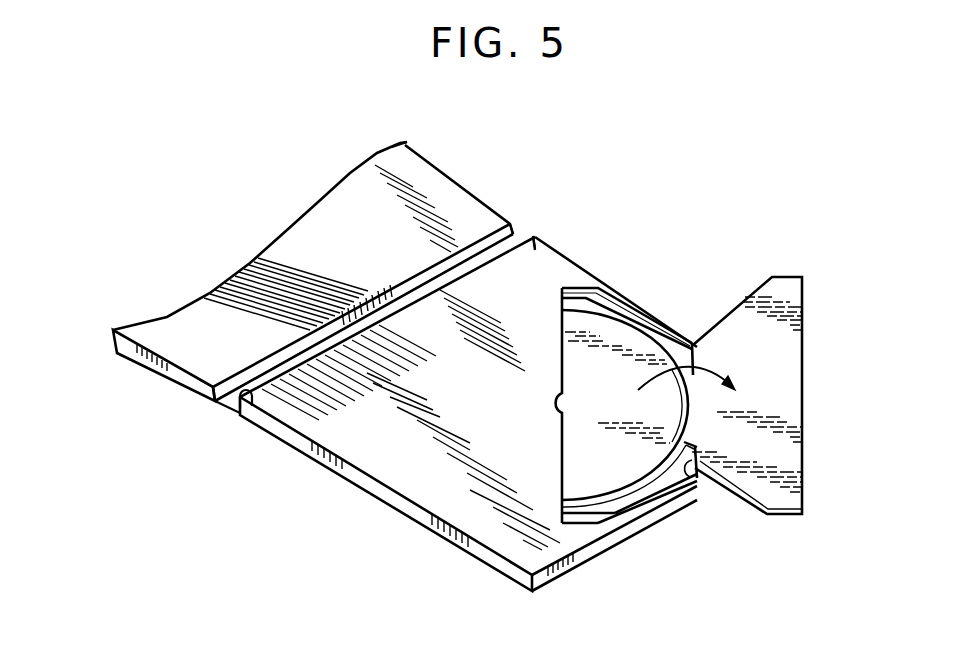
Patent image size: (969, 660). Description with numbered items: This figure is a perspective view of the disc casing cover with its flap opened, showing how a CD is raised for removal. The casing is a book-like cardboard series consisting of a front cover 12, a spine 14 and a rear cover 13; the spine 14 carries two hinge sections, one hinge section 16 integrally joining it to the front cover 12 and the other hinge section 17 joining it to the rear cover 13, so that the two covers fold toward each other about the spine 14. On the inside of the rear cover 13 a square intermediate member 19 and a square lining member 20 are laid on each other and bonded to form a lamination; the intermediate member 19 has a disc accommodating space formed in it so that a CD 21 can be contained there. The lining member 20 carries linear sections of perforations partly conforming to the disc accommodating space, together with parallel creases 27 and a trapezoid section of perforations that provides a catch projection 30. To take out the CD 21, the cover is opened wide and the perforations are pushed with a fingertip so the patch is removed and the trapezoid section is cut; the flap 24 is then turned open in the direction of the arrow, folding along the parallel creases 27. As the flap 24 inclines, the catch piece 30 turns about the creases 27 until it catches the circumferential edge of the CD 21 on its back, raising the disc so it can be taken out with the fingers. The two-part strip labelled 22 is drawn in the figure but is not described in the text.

The front cover 12 is at (162, 366).
The rear cover 13 is at (392, 497).
The spine 14 is at (228, 400).
The hinge section 16 is at (206, 396).
The hinge section 17 is at (249, 399).
The intermediate member 19 is at (587, 290).
The lining member 20 is at (532, 247).
The CD 21 is at (618, 454).
The strip 22 is at (653, 333).
The flap 24 is at (780, 325).
The parallel-crease 27 is at (693, 344).
The catch projection 30 is at (694, 452).